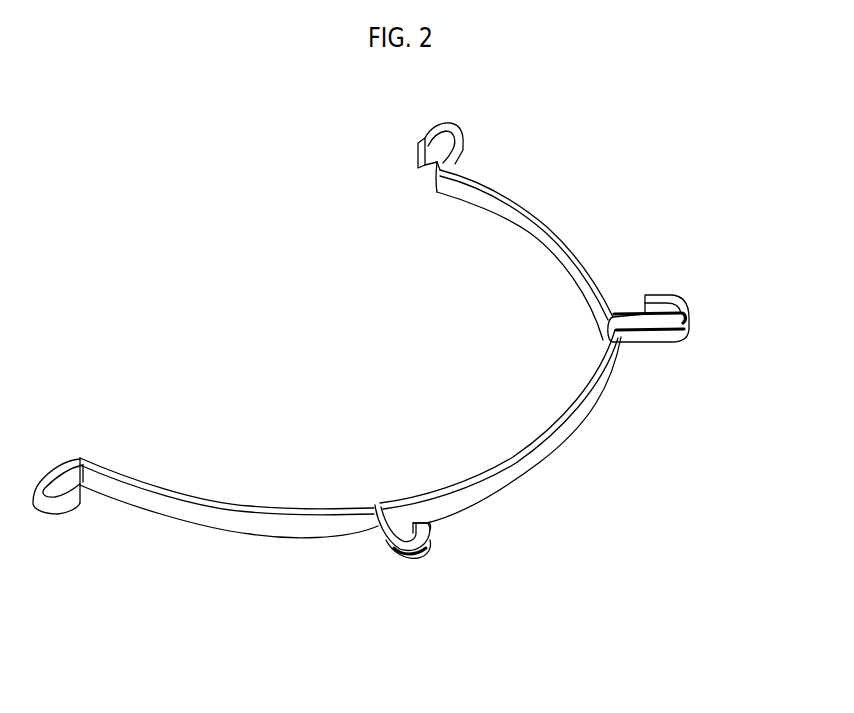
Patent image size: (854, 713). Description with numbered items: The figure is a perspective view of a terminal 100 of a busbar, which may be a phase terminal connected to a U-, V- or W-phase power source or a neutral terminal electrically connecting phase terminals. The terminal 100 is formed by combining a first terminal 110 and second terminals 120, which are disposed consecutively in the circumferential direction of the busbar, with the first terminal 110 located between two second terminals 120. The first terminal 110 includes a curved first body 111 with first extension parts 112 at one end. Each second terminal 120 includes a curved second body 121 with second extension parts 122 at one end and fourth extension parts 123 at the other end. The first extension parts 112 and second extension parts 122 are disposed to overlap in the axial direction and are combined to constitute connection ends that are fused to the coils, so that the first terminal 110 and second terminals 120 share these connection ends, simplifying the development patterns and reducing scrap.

The terminal 100 is at (170, 265).
The first terminal 110 is at (574, 464).
The first body 111 is at (486, 492).
The first extension parts 112 is at (690, 311).
The second terminals 120 is at (611, 244).
The second bodies 121 is at (576, 267).
The second extension parts 122 is at (690, 330).
The fourth extension parts 123 is at (465, 152).